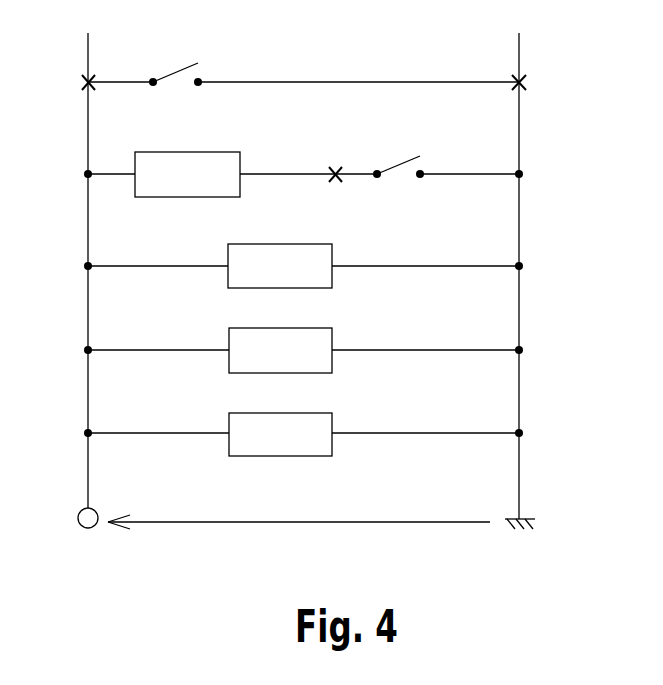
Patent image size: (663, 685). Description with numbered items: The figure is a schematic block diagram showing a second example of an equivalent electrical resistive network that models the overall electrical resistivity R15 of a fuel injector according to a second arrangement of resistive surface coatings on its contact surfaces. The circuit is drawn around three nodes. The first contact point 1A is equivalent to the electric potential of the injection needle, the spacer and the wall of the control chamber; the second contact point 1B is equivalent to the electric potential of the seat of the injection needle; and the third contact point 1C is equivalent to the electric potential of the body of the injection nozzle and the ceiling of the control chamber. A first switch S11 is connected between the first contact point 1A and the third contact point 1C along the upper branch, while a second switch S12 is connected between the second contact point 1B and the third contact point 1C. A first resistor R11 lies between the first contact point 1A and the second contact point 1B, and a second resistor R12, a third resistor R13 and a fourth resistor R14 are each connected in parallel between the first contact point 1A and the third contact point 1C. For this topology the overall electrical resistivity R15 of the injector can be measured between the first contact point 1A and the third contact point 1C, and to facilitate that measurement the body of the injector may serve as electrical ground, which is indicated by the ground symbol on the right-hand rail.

The first contact point 1A is at (72, 83).
The second contact point 1B is at (336, 159).
The third contact point 1C is at (535, 83).
The first switch S11 is at (173, 70).
The second switch S12 is at (395, 167).
The first resistor R11 is at (187, 174).
The second resistor R12 is at (280, 266).
The third resistor R13 is at (280, 350).
The fourth resistor R14 is at (280, 434).
The overall electrical resistivity R15 is at (299, 535).